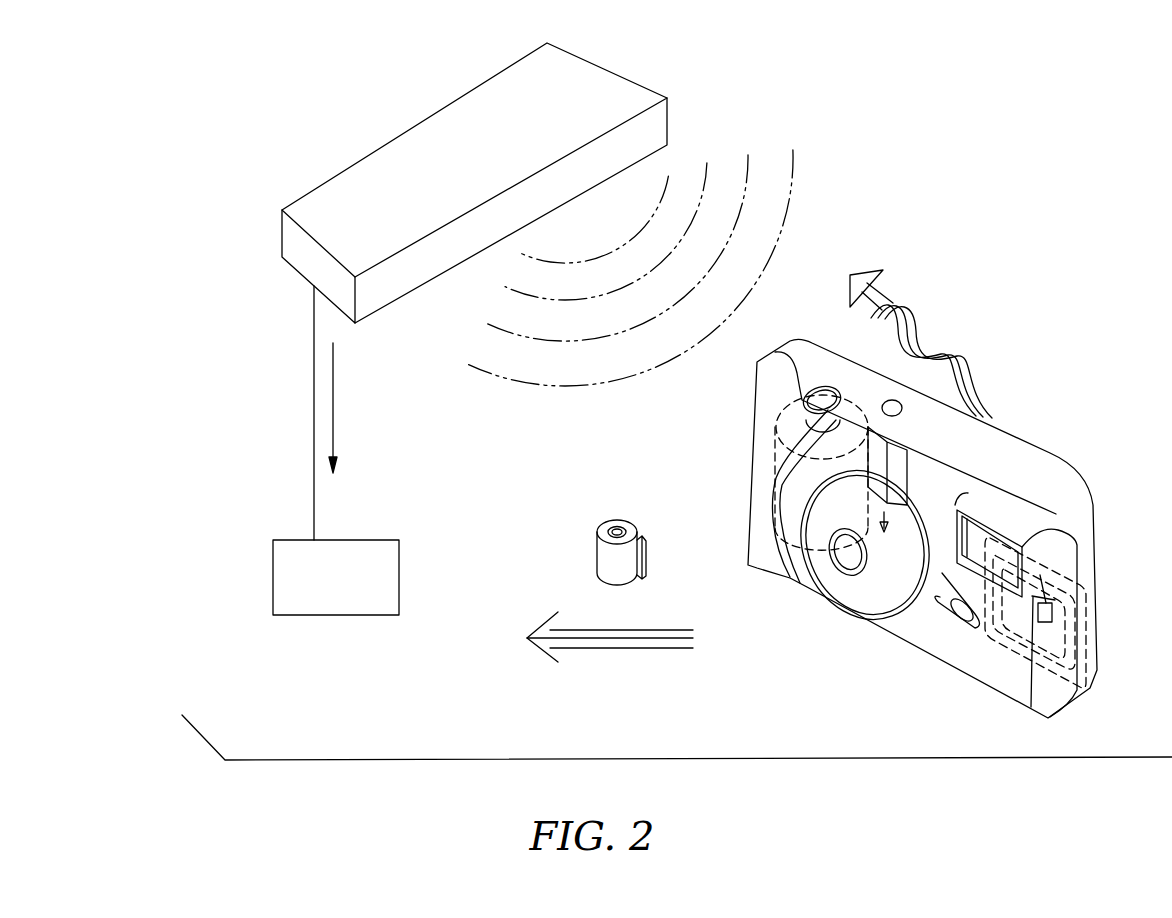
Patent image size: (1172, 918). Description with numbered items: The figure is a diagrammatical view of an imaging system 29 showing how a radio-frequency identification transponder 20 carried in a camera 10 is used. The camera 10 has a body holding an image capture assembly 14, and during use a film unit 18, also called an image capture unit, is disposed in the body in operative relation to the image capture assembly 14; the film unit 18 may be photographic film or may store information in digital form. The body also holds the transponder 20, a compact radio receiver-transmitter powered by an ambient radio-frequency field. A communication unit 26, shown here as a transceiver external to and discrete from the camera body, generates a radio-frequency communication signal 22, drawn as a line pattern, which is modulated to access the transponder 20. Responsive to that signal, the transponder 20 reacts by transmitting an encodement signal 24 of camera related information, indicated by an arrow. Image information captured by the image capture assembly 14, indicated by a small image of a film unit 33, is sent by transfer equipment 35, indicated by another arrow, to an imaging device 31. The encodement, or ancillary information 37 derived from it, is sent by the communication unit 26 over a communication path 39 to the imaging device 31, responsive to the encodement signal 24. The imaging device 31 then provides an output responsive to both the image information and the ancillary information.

The camera 10 is at (887, 648).
The image capture assembly 14 is at (860, 560).
The film unit 18 is at (777, 447).
The radio-frequency identification transponder 20 is at (1007, 640).
The radio-frequency communication signal 22 is at (733, 182).
The encodement signal 24 is at (1032, 397).
The communication unit 26 is at (407, 135).
The imaging system 29 is at (942, 160).
The imaging device 31 is at (380, 543).
The image information 33 is at (633, 523).
The transfer equipment 35 is at (638, 647).
The ancillary information 37 is at (333, 410).
The communication path 39 is at (314, 390).